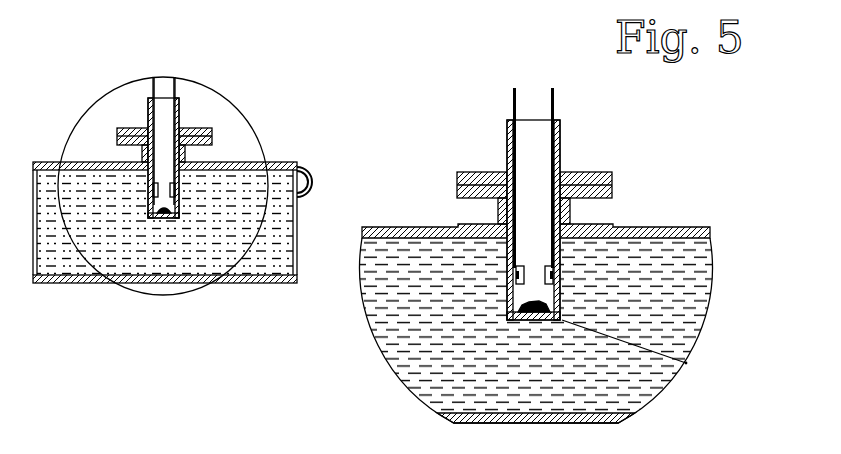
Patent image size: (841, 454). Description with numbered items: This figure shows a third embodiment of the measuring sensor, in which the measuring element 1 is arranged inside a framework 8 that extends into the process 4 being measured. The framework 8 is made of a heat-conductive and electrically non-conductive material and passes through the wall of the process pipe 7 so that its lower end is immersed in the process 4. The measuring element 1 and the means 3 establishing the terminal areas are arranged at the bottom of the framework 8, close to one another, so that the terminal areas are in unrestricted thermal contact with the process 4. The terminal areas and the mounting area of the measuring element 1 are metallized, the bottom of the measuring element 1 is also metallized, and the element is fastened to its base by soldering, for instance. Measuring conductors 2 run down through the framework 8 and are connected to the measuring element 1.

The measuring element 1 is at (532, 300).
The measuring conductors 2 is at (512, 101).
The means establishing terminal areas 3 is at (517, 266).
The process 4 is at (658, 295).
The process pipe 7 is at (684, 232).
The framework 8 is at (511, 144).